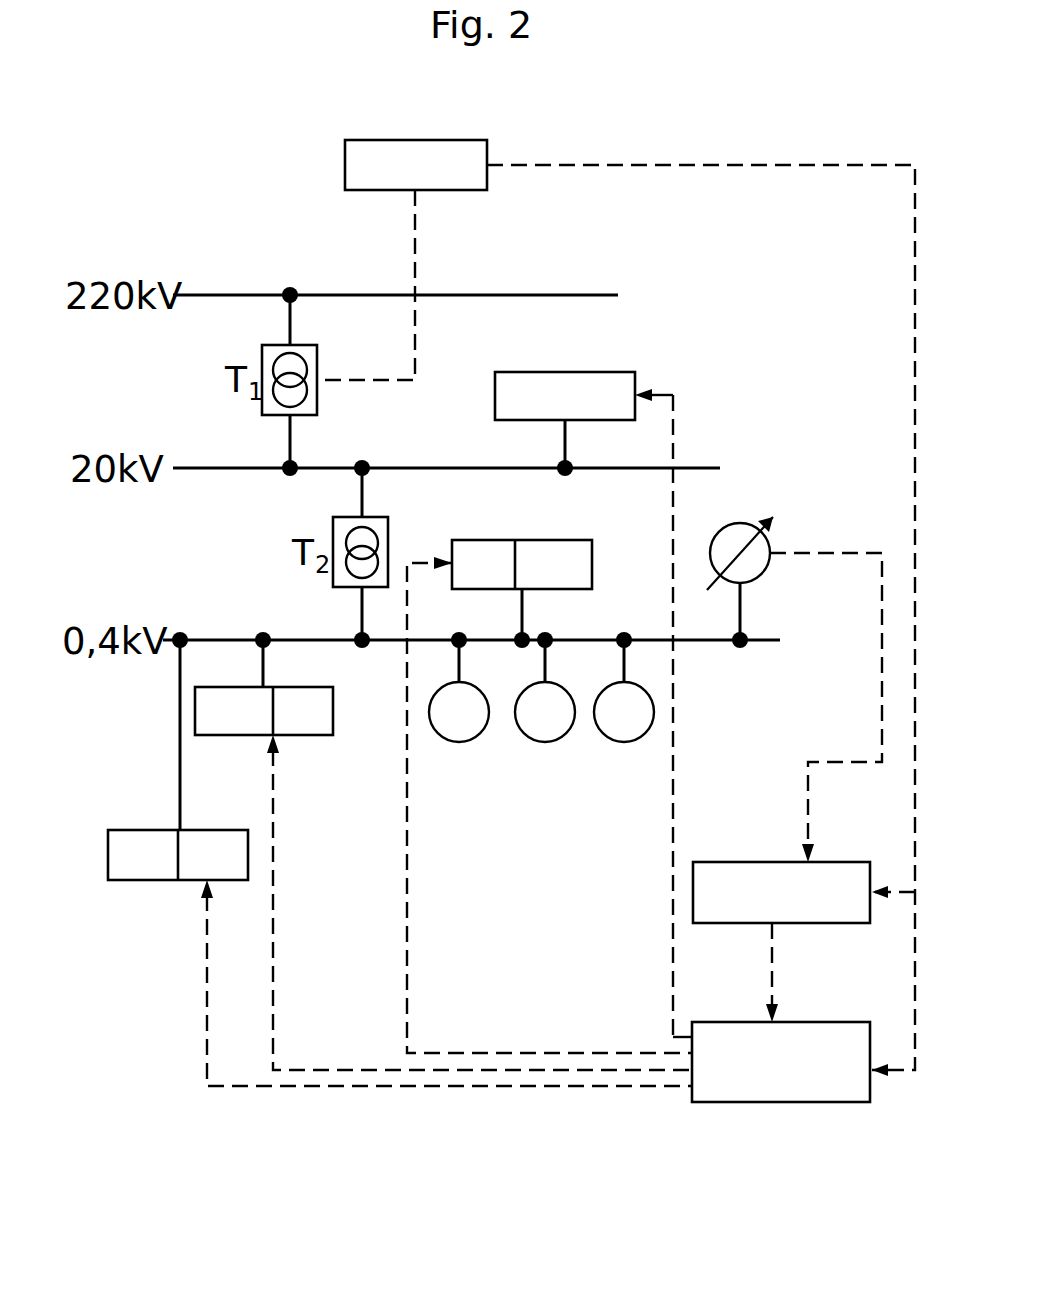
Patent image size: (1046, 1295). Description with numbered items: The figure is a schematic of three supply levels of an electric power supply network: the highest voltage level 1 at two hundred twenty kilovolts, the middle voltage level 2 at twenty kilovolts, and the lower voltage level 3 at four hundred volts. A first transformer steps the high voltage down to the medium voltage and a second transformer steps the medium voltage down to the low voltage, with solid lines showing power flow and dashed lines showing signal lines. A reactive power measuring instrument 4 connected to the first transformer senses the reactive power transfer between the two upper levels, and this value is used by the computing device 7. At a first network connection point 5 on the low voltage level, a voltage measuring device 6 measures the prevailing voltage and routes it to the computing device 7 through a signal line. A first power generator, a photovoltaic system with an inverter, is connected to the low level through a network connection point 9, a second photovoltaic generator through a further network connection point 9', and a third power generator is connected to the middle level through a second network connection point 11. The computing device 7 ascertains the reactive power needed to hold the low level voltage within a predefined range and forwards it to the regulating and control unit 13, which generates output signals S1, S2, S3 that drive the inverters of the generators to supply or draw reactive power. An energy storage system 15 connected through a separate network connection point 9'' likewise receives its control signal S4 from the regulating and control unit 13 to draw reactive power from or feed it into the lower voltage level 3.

The highest voltage level 1 is at (590, 295).
The middle voltage level 2 is at (700, 468).
The lower voltage level 3 is at (763, 642).
The reactive power measuring instrument 4 is at (418, 140).
The first network connection point 5 is at (745, 640).
The voltage measuring device 6 is at (733, 527).
The computing device 7 is at (712, 860).
The network connection point 9 is at (541, 641).
The network connection point 9' is at (264, 659).
The network connection point 9'' is at (204, 706).
The second network connection point 11 is at (565, 468).
The regulating and control unit 13 is at (780, 1102).
The energy storage system 15 is at (150, 882).
The output signal S1 is at (670, 1030).
The output signal S2 is at (460, 1050).
The output signal S3 is at (310, 1068).
The output signal S4 is at (262, 1088).